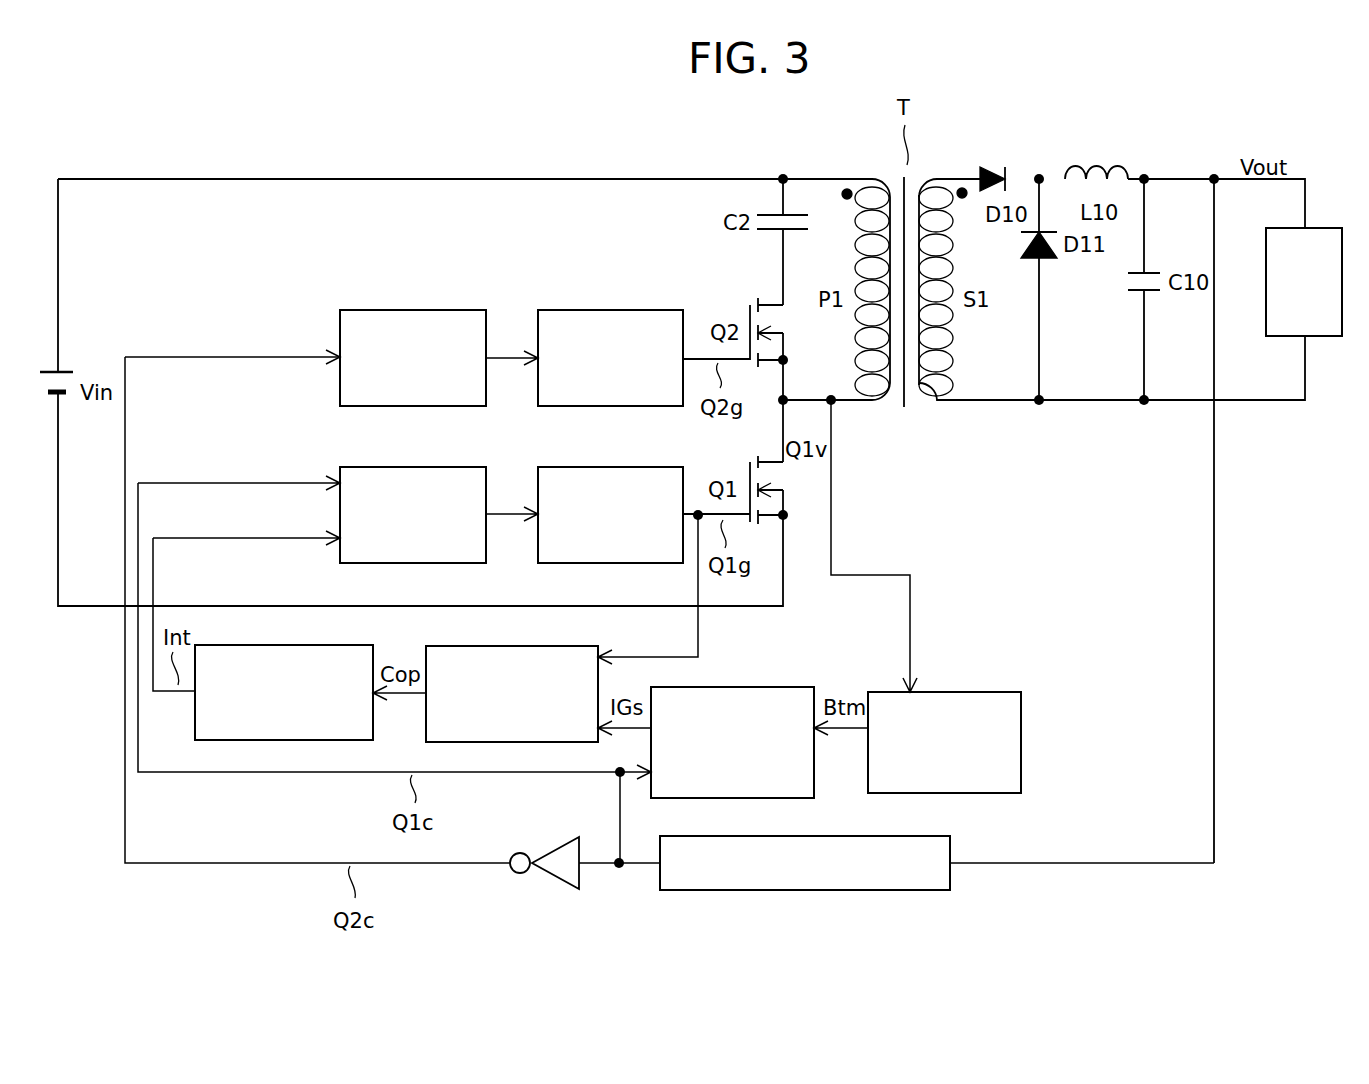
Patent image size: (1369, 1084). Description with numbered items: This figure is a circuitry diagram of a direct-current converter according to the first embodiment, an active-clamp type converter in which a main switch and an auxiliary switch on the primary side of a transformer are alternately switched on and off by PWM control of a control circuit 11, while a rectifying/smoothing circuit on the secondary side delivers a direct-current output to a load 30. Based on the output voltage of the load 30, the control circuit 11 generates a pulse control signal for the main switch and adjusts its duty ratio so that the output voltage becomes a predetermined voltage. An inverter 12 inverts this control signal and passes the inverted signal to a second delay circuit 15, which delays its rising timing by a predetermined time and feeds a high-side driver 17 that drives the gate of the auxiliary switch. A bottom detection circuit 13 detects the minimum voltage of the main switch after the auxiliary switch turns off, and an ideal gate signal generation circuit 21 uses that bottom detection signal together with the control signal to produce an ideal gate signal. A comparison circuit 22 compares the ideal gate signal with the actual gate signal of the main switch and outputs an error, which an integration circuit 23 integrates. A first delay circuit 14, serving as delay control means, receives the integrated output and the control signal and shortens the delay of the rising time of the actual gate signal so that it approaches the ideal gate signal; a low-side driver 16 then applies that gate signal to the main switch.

The control circuit 11 is at (863, 890).
The inverter 12 is at (552, 880).
The bottom detection circuit 13 is at (1021, 732).
The first delay circuit 14 is at (365, 467).
The second delay circuit 15 is at (412, 310).
The low-side driver 16 is at (568, 467).
The high-side driver 17 is at (609, 310).
The ideal gate signal generation circuit 21 is at (790, 687).
The comparison circuit 22 is at (475, 646).
The integration circuit 23 is at (193, 725).
The load 30 is at (1318, 336).